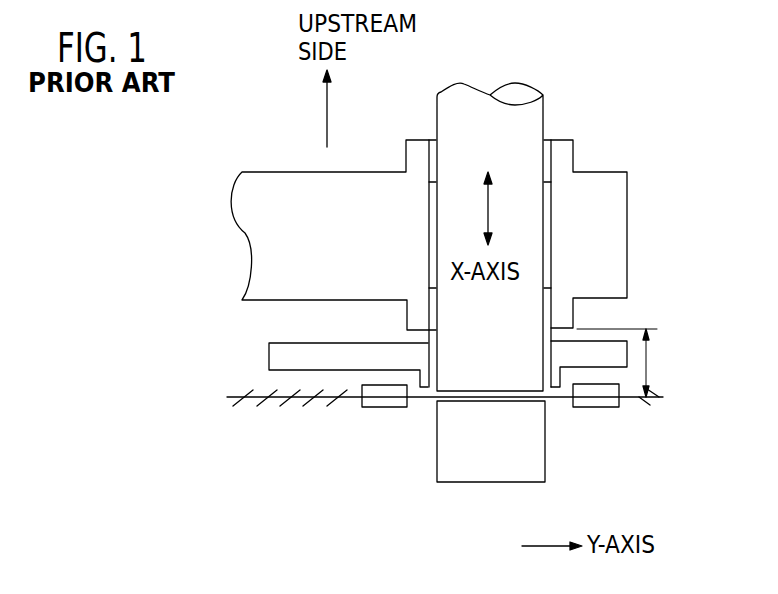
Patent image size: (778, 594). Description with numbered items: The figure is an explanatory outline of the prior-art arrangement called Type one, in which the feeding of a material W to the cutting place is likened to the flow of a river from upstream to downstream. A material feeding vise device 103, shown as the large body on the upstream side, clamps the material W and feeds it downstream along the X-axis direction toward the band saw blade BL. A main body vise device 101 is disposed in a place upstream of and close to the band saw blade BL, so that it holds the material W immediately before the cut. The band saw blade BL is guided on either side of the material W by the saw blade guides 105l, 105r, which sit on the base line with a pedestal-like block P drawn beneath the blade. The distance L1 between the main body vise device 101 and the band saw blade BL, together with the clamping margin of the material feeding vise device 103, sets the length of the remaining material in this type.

The material feeding vise device 103 is at (280, 167).
The material W is at (463, 95).
The main body vise device 101 is at (267, 355).
The band saw blade BL is at (642, 400).
The length L1 is at (628, 363).
The saw blade guide 105l is at (373, 408).
The saw blade guide 105r is at (590, 408).
The pedestal P is at (492, 473).